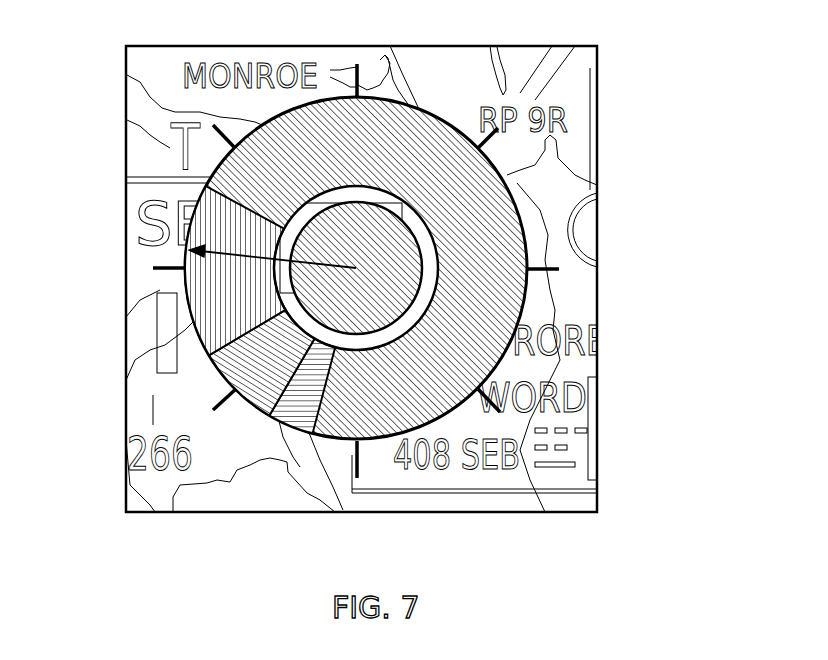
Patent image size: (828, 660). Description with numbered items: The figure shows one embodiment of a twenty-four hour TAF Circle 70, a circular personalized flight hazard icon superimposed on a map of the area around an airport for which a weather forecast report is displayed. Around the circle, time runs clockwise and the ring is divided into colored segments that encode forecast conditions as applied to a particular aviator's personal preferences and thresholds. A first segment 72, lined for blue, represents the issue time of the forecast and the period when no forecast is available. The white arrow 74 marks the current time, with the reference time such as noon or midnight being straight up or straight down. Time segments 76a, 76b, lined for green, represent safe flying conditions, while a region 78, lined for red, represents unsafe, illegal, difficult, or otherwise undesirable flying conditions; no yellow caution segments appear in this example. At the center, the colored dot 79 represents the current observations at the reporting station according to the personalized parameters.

The 24-hour TAF Circle 70 is at (512, 193).
The first segment 72 is at (303, 413).
The white arrow 74 is at (240, 255).
The time segment 76a is at (502, 315).
The time segment 76b is at (220, 372).
The region 78 is at (200, 225).
The colored dot 79 is at (353, 218).